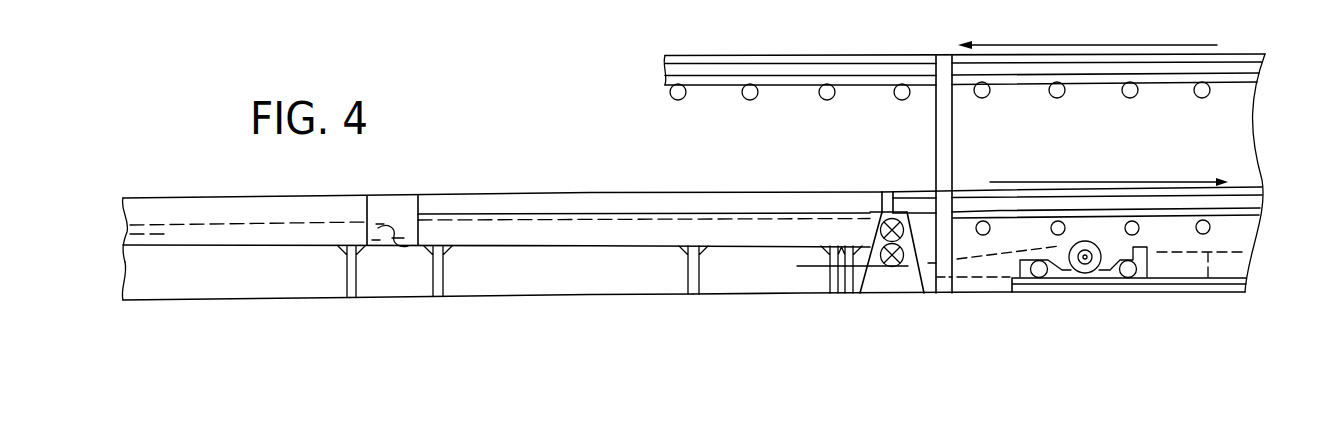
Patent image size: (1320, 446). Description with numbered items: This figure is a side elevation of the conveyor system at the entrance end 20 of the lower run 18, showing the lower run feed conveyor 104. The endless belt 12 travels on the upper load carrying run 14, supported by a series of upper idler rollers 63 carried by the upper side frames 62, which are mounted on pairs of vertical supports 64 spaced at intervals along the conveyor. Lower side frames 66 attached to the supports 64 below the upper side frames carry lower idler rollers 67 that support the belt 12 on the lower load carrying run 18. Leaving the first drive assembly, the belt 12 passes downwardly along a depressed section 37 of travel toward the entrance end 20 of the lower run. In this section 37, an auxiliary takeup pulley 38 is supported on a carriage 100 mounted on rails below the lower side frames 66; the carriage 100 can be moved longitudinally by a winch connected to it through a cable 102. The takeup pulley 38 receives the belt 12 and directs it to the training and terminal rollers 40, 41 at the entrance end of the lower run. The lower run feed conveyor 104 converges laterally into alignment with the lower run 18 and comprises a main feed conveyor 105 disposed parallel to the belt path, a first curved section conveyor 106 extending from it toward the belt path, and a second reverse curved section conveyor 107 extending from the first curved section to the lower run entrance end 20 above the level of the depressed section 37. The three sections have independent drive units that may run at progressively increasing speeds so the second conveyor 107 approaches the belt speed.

The endless belt 12 is at (966, 297).
The upper load carrying run 14 is at (809, 50).
The lower load carrying run 18 is at (1230, 190).
The entrance end of the lower run 20 is at (887, 183).
The depressed section 37 is at (818, 278).
The auxiliary takeup pulley 38 is at (1092, 270).
The training roller 40 is at (900, 268).
The terminal roller 41 is at (880, 210).
The upper side frames 62 is at (721, 88).
The upper idler rollers 63 is at (753, 96).
The vertical supports 64 is at (953, 147).
The lower side frames 66 is at (1243, 217).
The lower idler rollers 67 is at (1209, 233).
The carriage 100 is at (1148, 270).
The cable 102 is at (1206, 290).
The lower run feed conveyor 104 is at (541, 176).
The main feed conveyor 105 is at (267, 247).
The first curved section conveyor 106 is at (536, 247).
The second reverse curved section conveyor 107 is at (772, 252).